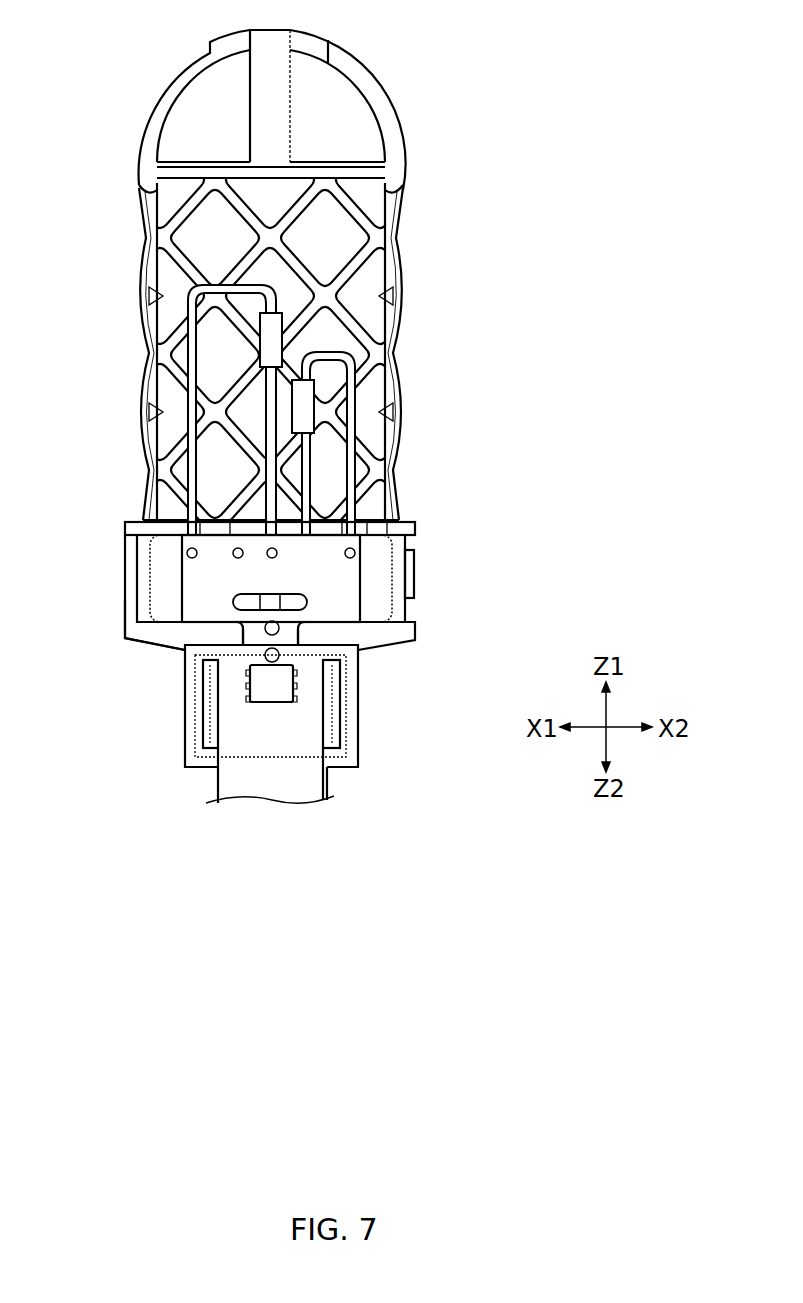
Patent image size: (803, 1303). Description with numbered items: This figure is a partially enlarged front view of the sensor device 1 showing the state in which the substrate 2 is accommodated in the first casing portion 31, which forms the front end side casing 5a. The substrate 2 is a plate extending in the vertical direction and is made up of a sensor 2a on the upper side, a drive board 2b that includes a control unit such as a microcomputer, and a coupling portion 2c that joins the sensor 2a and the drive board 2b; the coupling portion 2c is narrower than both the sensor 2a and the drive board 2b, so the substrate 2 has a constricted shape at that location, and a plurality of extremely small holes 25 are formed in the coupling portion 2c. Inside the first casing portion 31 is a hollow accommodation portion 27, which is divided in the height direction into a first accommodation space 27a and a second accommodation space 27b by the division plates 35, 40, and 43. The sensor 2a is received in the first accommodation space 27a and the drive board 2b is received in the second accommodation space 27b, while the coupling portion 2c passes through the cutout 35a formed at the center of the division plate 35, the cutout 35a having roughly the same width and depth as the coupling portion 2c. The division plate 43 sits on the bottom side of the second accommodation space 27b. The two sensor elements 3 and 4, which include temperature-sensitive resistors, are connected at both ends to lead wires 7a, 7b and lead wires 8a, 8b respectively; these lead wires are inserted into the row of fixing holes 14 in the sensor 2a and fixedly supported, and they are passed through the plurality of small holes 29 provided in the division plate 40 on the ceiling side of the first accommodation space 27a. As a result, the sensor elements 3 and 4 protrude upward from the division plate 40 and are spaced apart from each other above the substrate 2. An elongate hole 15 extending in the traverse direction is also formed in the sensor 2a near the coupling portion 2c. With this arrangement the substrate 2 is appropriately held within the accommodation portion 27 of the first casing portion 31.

The sensor device 1 is at (468, 354).
The substrate 2 is at (92, 665).
The sensor 2a is at (198, 617).
The drive board 2b is at (233, 720).
The coupling portion 2c is at (243, 633).
The sensor element 3 is at (278, 318).
The sensor element 4 is at (300, 410).
The front end side casing 5a is at (476, 464).
The lead wire 7a is at (267, 450).
The lead wire 7b is at (188, 452).
The lead wire 8a is at (310, 470).
The lead wire 8b is at (353, 412).
The fixing hole 14 is at (398, 543).
The elongate hole 15 is at (234, 602).
The small hole 25 is at (280, 653).
The accommodation portion 27 is at (504, 557).
The first accommodation space 27a is at (374, 582).
The second accommodation space 27b is at (333, 636).
The small hole 29 is at (233, 530).
The first casing portion 31 is at (358, 732).
The division plate 35 is at (279, 627).
The cutout 35a is at (240, 640).
The division plate 40 is at (356, 552).
The division plate 43 is at (345, 763).